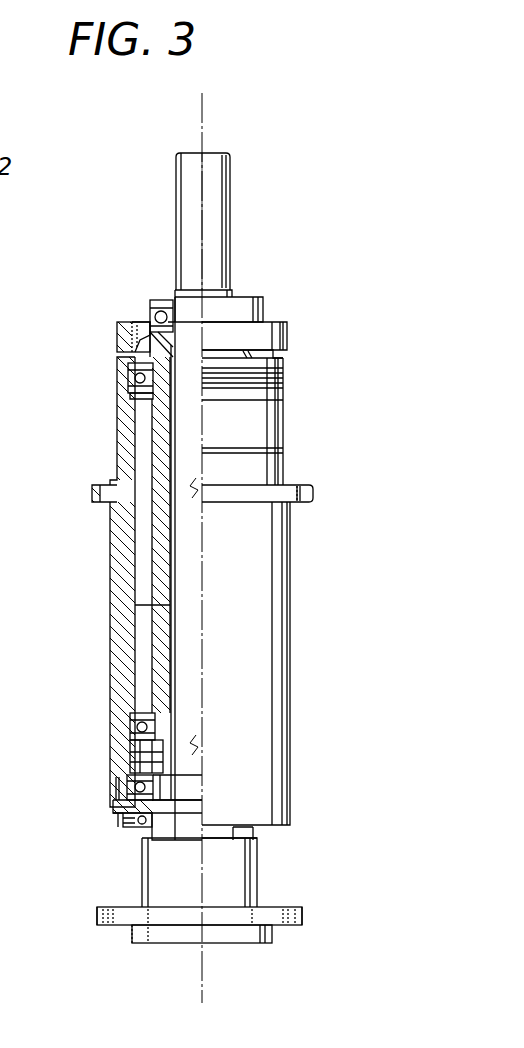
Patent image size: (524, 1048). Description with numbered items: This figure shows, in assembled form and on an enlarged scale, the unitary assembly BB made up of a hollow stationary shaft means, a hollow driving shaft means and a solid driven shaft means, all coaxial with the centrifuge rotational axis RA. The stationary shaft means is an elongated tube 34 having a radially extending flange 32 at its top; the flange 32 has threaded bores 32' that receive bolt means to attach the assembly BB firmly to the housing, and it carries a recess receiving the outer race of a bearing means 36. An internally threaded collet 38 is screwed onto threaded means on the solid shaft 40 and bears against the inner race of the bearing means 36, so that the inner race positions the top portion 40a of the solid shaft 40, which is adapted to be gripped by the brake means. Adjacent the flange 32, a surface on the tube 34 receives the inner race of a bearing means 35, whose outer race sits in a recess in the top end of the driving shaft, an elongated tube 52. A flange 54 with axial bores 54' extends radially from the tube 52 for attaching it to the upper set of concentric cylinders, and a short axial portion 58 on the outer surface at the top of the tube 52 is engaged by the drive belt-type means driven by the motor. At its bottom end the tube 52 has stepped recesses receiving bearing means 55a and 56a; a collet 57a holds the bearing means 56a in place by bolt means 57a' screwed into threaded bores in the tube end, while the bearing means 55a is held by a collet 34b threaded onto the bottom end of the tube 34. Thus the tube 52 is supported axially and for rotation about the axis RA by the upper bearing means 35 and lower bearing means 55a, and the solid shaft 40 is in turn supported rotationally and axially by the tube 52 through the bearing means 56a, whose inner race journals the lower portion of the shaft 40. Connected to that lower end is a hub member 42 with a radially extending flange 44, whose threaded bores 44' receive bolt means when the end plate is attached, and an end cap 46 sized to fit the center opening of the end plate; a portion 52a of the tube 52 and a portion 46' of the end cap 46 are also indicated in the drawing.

The centrifuge rotational axis RA is at (202, 195).
The top portion of solid shaft 40a is at (177, 222).
The solid driven shaft means 40 is at (182, 688).
The bearing means 36 is at (147, 310).
The internally threaded collet 38 is at (247, 305).
The unitary assembly BB is at (302, 342).
The radially extending flange 32 is at (84, 340).
The threaded bores 32' is at (91, 318).
The short axial portion 58 is at (282, 375).
The bearing means 35 is at (130, 393).
The flange 54 is at (257, 531).
The axial bores 54' is at (68, 474).
The elongated tube 52 is at (110, 555).
The housing shoulder 52a is at (135, 603).
The elongated tube 34 is at (160, 648).
The bearing means 55a is at (132, 732).
The bearing means 56a is at (160, 783).
The collet 34b is at (112, 810).
The collet 57a is at (79, 842).
The bolt means 57a' is at (120, 855).
The hub member 42 is at (280, 871).
The radially extending flange 44 is at (156, 912).
The threaded bores 44' is at (191, 944).
The end cap 46 is at (202, 958).
The boss portion 46' is at (140, 965).